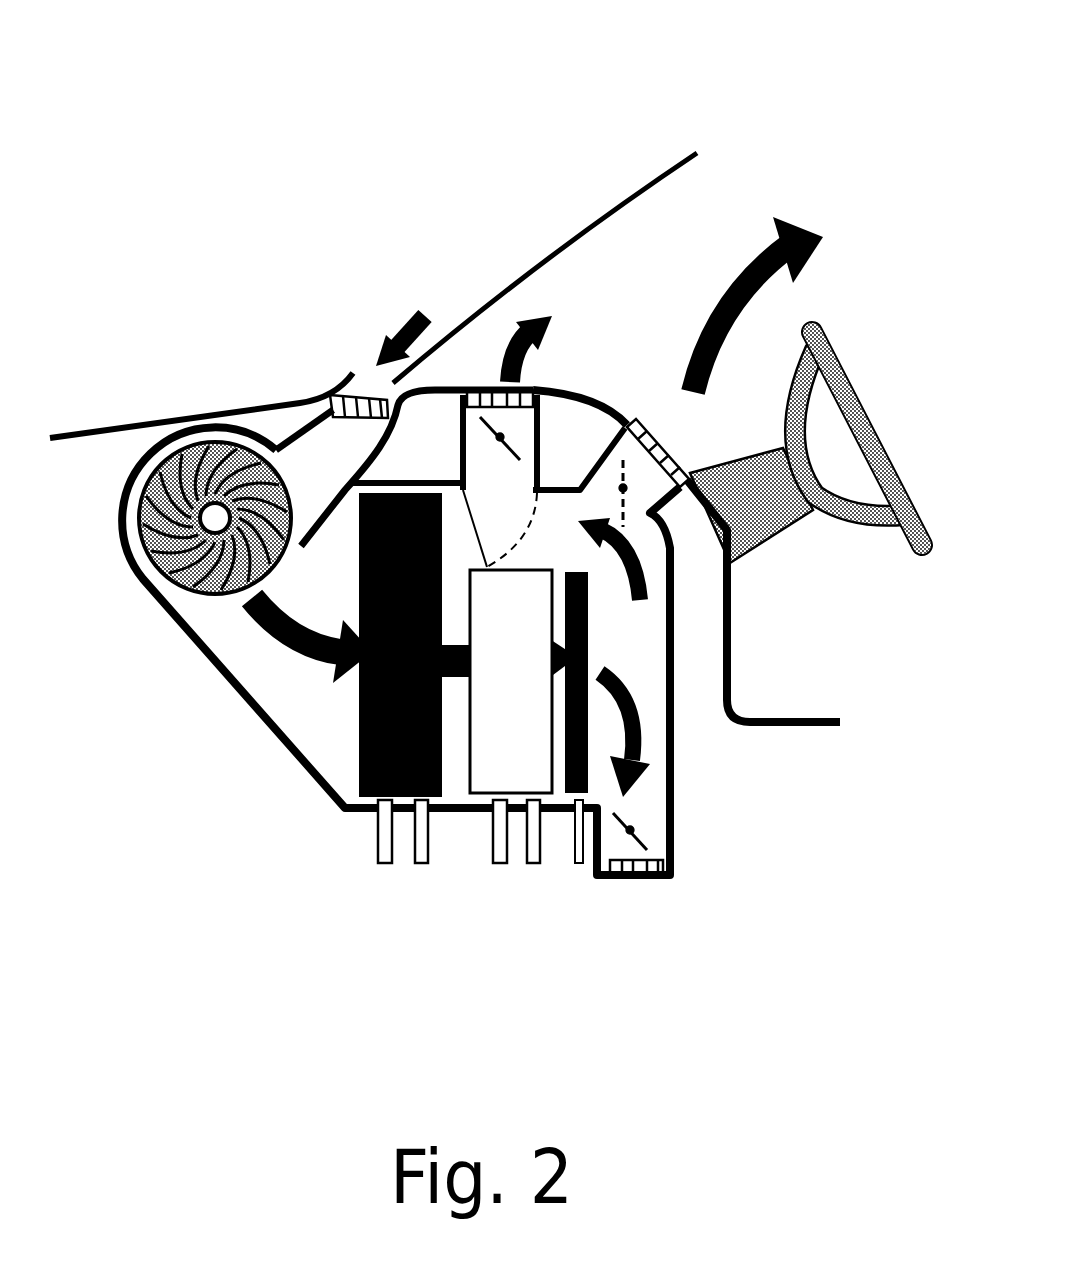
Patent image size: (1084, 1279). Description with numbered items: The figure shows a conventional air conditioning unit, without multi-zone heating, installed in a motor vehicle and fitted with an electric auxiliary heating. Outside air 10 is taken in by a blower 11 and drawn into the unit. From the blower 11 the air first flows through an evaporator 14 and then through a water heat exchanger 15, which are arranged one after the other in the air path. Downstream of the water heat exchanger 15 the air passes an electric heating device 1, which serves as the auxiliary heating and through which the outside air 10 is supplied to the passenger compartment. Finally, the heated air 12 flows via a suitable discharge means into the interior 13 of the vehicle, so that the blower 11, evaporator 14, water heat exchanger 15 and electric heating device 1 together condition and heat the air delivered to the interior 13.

The electric heating device 1 is at (572, 813).
The outside air 10 is at (411, 313).
The blower 11 is at (192, 463).
The heated air 12 is at (552, 318).
The interior 13 is at (762, 147).
The evaporator 14 is at (360, 813).
The water heat exchanger 15 is at (497, 760).